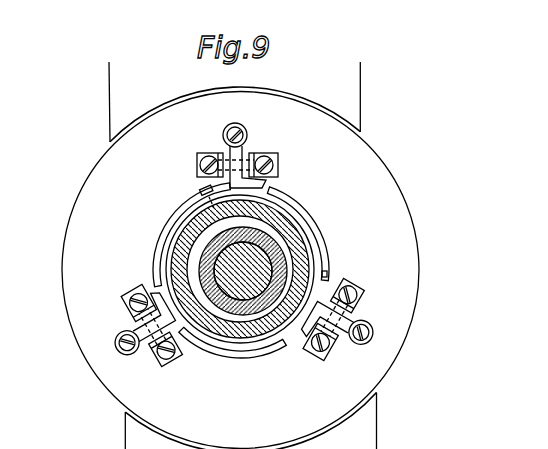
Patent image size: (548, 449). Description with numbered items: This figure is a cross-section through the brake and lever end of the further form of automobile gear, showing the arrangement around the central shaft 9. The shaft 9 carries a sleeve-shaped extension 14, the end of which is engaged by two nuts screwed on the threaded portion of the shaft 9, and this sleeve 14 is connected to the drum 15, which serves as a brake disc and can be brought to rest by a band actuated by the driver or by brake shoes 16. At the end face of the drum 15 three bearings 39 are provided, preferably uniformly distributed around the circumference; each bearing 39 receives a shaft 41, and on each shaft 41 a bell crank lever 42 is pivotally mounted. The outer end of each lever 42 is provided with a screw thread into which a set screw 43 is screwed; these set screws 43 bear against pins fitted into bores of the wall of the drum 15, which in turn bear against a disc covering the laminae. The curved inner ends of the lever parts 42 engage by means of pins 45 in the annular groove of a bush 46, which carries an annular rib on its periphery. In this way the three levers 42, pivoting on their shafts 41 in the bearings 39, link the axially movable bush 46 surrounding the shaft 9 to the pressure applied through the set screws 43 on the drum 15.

The shaft 9 is at (237, 284).
The sleeve 14 is at (260, 300).
The drum 15 is at (397, 212).
The brake shoes 16 is at (348, 92).
The bearings 39 is at (204, 154).
The shafts 41 is at (251, 152).
The bell crank levers 42 is at (295, 204).
The set screws 43 is at (246, 134).
The pins 45 is at (199, 191).
The bush 46 is at (175, 233).